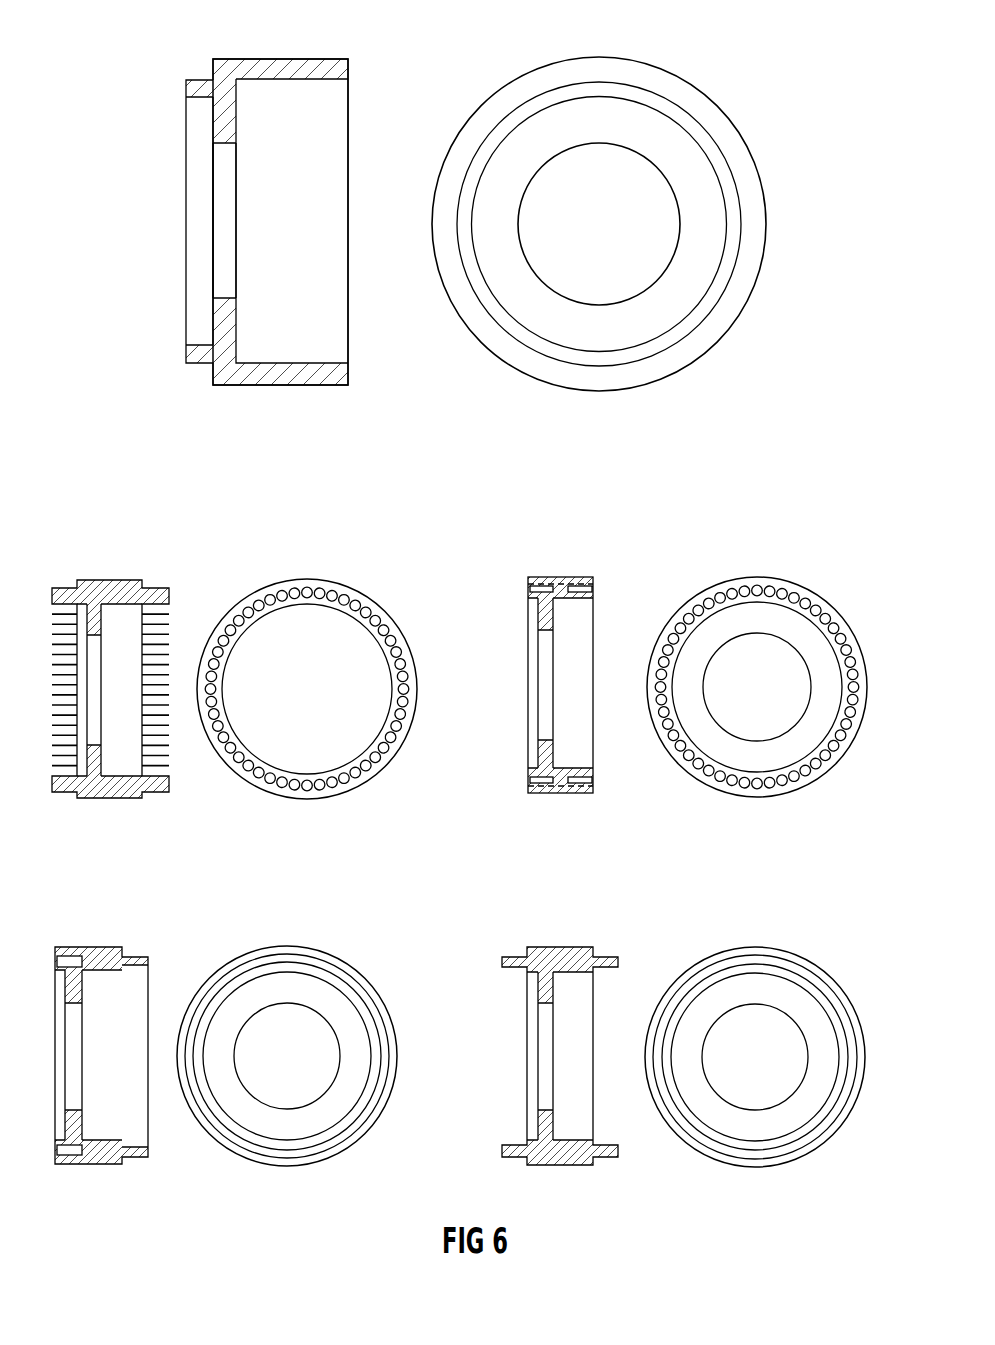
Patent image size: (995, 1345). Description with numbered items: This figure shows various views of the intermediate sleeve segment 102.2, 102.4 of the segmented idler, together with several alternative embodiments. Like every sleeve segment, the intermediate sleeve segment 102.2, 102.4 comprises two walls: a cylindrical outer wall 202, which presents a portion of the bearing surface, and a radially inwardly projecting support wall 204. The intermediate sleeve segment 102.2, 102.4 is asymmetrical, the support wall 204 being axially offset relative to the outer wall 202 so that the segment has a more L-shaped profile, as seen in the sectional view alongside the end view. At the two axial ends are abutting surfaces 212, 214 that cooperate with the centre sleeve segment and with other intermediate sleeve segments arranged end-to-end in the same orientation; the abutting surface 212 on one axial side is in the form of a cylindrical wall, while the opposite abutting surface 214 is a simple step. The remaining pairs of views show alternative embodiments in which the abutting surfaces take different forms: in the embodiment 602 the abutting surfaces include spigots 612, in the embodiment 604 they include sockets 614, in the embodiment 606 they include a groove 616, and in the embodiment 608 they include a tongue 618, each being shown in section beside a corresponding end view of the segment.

The cylindrical outer wall 202 is at (272, 198).
The abutting surface 212 is at (354, 65).
The abutting surface 214 is at (184, 81).
The support wall 204 is at (227, 145).
The intermediate sleeve segment 102.2 is at (655, 218).
The intermediate sleeve segment 102.4 is at (740, 120).
The spigots 612 is at (166, 589).
The alternative embodiment of intermediate sleeve segment 602 is at (344, 573).
The sockets 614 is at (596, 586).
The alternative embodiment of intermediate sleeve segment 604 is at (795, 566).
The groove 616 is at (57, 960).
The alternative embodiment of intermediate sleeve segment 606 is at (339, 948).
The tongue 618 is at (610, 957).
The alternative embodiment of intermediate sleeve segment 608 is at (795, 946).